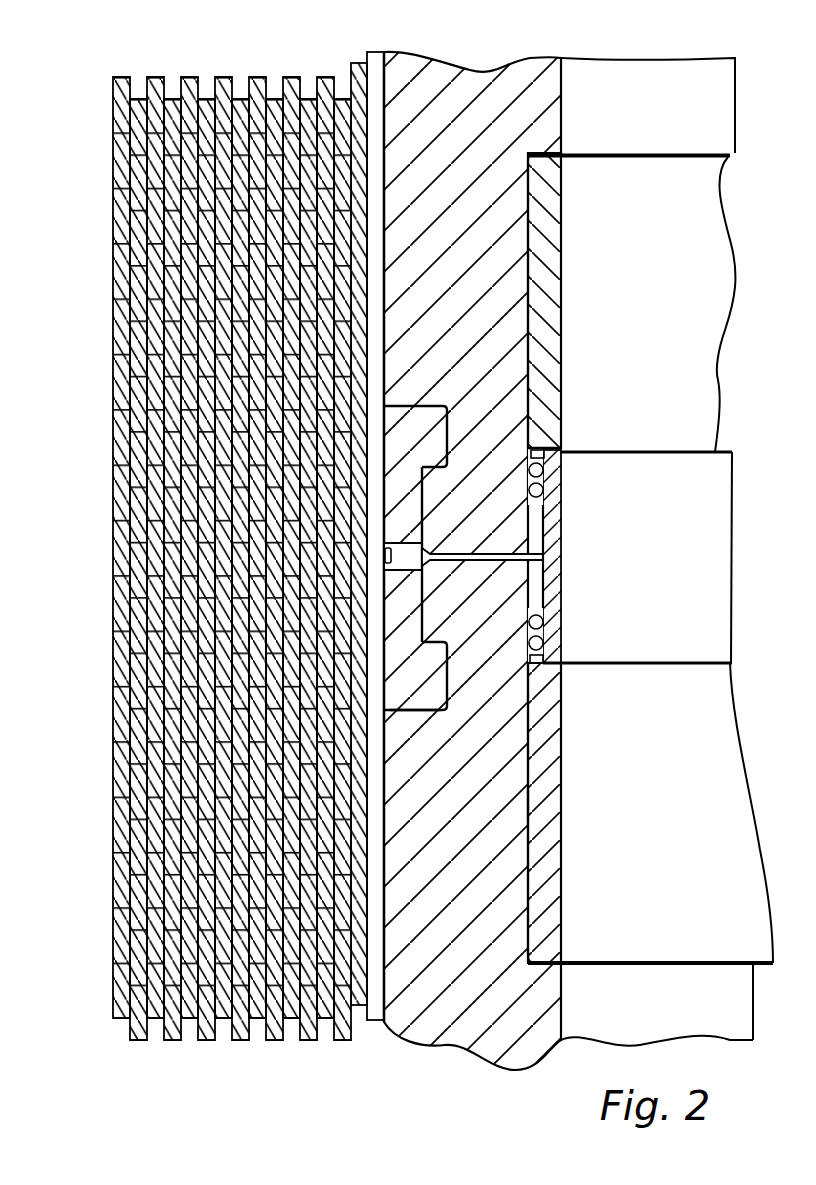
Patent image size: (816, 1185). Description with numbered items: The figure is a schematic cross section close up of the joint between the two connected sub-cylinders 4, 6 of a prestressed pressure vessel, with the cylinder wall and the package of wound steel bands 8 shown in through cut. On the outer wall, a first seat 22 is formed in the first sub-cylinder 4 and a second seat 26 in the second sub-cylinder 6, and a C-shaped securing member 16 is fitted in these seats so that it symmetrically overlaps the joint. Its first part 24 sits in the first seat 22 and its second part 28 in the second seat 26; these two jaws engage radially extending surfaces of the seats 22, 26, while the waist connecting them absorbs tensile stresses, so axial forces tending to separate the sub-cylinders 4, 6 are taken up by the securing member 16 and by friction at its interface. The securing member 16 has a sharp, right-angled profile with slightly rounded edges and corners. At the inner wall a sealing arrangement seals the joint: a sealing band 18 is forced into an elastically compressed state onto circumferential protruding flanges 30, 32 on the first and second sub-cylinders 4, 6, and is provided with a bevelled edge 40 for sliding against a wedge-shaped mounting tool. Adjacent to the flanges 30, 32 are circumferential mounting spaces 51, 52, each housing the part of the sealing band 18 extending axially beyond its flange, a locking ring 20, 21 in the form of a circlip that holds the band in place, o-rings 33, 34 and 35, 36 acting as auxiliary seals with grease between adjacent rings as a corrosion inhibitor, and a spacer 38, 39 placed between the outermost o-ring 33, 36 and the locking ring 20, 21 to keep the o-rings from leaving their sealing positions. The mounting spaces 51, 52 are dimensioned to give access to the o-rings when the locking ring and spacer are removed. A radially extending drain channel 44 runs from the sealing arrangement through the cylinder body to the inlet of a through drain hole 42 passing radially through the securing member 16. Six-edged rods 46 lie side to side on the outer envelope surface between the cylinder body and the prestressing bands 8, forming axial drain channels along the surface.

The first sub-cylinder 4 is at (472, 97).
The second sub-cylinder 6 is at (463, 1030).
The package of wound steel bands 8 is at (217, 1020).
The securing member 16 is at (400, 637).
The sealing band 18 is at (556, 538).
The locking ring 20 is at (550, 277).
The locking ring 21 is at (554, 865).
The first seat 22 is at (445, 438).
The first part of the securing member 24 is at (432, 420).
The second seat 26 is at (450, 672).
The second part of the securing member 28 is at (415, 688).
The circumferential protruding flange 30 is at (545, 527).
The circumferential protruding flange 32 is at (555, 583).
The o-ring 33 is at (543, 460).
The o-ring 34 is at (543, 490).
The o-ring 35 is at (556, 622).
The o-ring 36 is at (556, 640).
The spacer 38 is at (540, 444).
The spacer 39 is at (542, 670).
The bevelled edge 40 is at (556, 662).
The through drain hole 42 is at (430, 550).
The drain channel 44 is at (470, 555).
The six-edged rod 46 is at (369, 1020).
The mounting space 51 is at (528, 238).
The mounting space 52 is at (526, 806).